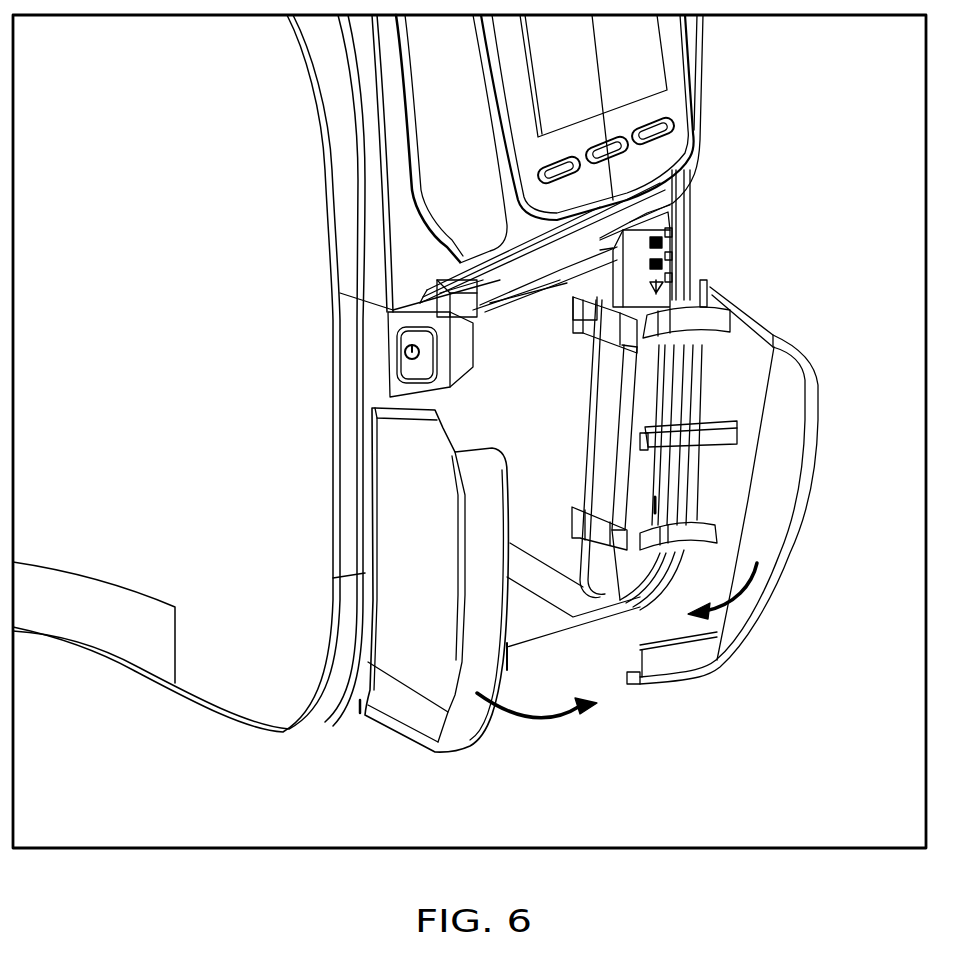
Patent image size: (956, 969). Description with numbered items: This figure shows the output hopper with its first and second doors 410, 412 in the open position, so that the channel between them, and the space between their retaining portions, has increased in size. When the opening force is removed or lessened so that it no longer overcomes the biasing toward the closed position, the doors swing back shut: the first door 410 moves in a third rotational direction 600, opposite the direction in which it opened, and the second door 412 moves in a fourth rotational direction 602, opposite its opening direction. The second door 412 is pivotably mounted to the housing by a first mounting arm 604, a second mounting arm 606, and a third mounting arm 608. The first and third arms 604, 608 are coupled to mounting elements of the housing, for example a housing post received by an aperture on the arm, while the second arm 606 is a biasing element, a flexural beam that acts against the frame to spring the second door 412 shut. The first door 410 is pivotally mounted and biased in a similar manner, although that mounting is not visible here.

The first door 410 is at (415, 723).
The second door 412 is at (790, 362).
The third rotational direction 600 is at (540, 720).
The fourth rotational direction 602 is at (740, 597).
The first mounting arm 604 is at (688, 325).
The second mounting arm 606 is at (700, 430).
The third mounting arm 608 is at (705, 537).